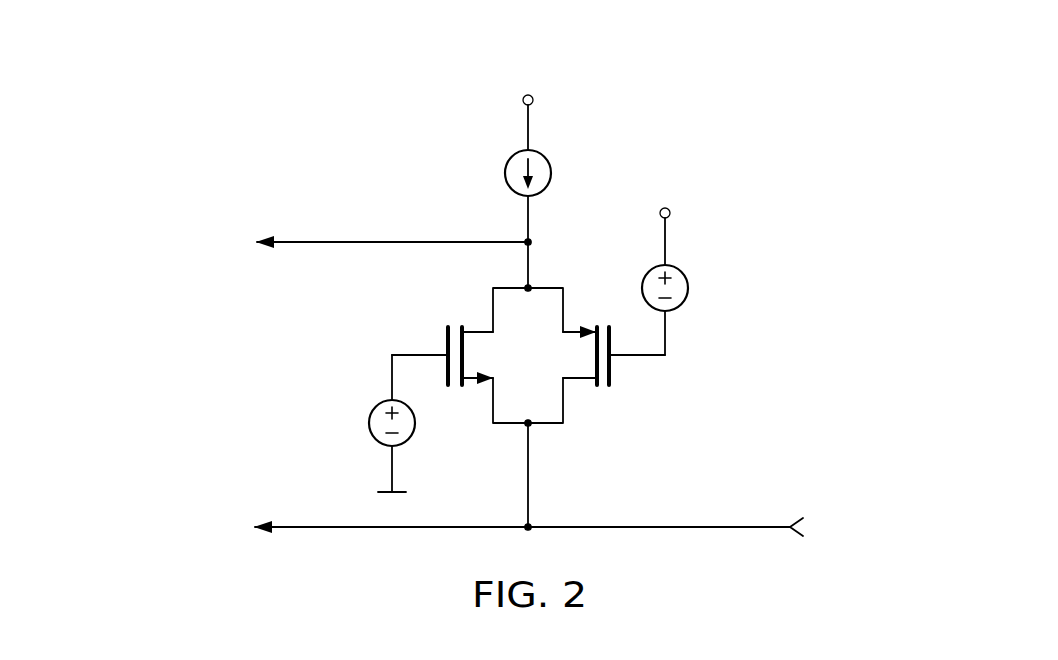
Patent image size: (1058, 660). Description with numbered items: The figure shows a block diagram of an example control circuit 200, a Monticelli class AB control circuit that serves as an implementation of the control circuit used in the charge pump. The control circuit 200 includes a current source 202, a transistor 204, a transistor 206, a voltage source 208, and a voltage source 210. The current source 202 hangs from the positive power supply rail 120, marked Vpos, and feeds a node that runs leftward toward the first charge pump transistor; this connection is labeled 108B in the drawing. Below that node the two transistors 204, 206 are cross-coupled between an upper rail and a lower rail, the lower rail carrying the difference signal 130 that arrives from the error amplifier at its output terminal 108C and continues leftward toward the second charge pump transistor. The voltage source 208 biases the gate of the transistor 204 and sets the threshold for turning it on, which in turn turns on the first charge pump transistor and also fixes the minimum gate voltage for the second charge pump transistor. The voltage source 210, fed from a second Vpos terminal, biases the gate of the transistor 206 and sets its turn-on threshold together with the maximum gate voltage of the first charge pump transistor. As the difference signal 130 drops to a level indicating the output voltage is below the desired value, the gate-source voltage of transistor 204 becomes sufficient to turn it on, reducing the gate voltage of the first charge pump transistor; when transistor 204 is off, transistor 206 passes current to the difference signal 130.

The control circuit 200 is at (676, 81).
The power supply rail 120 is at (527, 116).
The current source 202 is at (505, 176).
The input terminal 108B is at (284, 241).
The transistor 204 is at (446, 343).
The transistor 206 is at (611, 366).
The voltage source 208 is at (369, 424).
The voltage source 210 is at (688, 288).
The output terminal 108C is at (284, 528).
The difference signal 130 is at (663, 528).